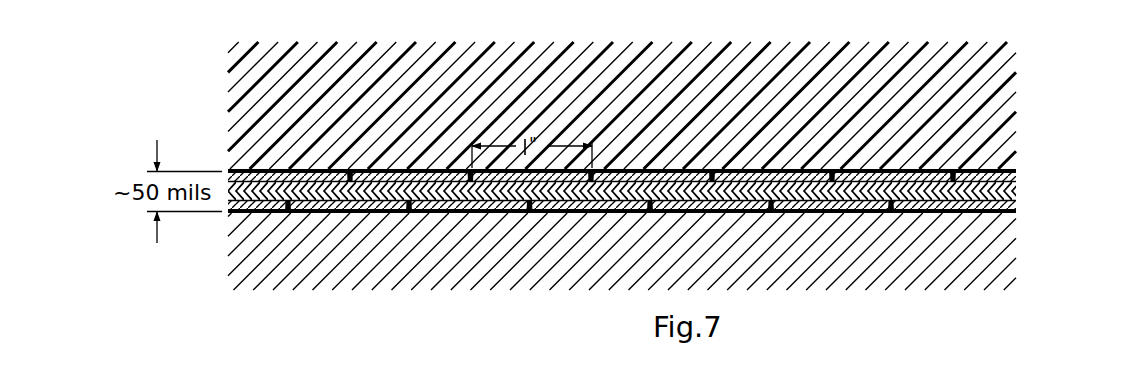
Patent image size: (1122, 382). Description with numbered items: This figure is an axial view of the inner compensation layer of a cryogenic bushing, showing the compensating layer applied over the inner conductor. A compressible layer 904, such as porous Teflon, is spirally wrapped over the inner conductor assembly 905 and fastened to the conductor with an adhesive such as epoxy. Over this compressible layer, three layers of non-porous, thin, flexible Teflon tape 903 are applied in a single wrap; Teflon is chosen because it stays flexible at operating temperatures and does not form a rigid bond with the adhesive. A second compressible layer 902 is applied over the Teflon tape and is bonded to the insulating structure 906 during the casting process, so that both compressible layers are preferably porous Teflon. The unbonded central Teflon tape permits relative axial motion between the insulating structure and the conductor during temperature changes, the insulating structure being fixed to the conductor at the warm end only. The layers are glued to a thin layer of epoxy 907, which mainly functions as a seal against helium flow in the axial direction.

The second compressible layer 902 is at (1015, 176).
The Teflon tape 903 is at (1016, 190).
The compressible layer 904 is at (1016, 206).
The inner conductor assembly 905 is at (392, 262).
The insulating structure 906 is at (912, 159).
The epoxy 907 is at (773, 213).